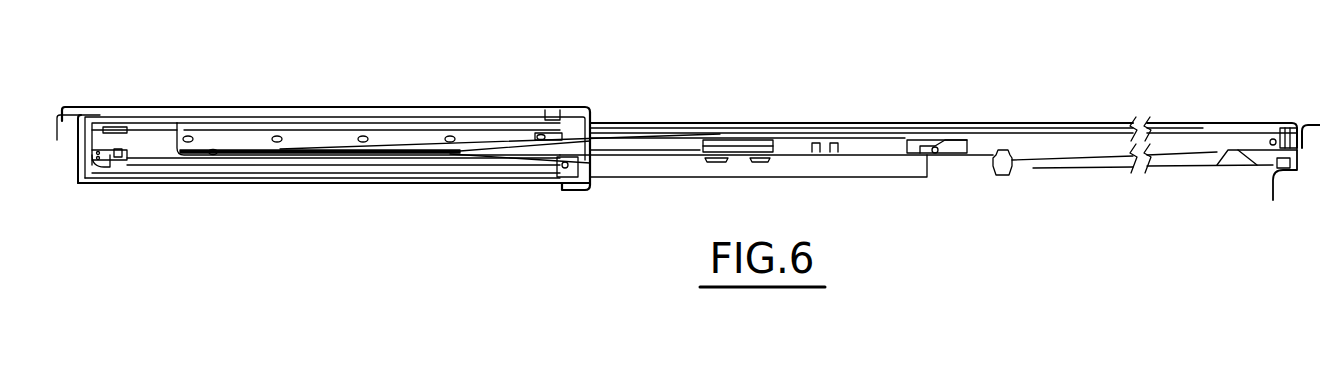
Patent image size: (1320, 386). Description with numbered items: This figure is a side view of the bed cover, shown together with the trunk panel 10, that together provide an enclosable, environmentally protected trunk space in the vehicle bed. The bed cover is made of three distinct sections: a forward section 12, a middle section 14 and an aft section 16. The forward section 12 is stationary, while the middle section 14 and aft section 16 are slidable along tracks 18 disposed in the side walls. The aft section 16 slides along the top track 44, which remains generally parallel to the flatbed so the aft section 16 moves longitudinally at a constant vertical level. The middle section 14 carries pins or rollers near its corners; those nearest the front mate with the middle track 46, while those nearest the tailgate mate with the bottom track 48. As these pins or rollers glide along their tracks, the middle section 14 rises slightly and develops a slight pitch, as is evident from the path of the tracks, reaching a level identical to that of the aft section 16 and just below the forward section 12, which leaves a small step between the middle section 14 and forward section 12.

The trunk panel 10 is at (375, 182).
The forward section 12 is at (469, 118).
The middle section 14 is at (852, 123).
The aft section 16 is at (1010, 133).
The tracks 18 is at (340, 138).
The top track 44 is at (287, 118).
The middle track 46 is at (488, 152).
The bottom track 48 is at (652, 157).